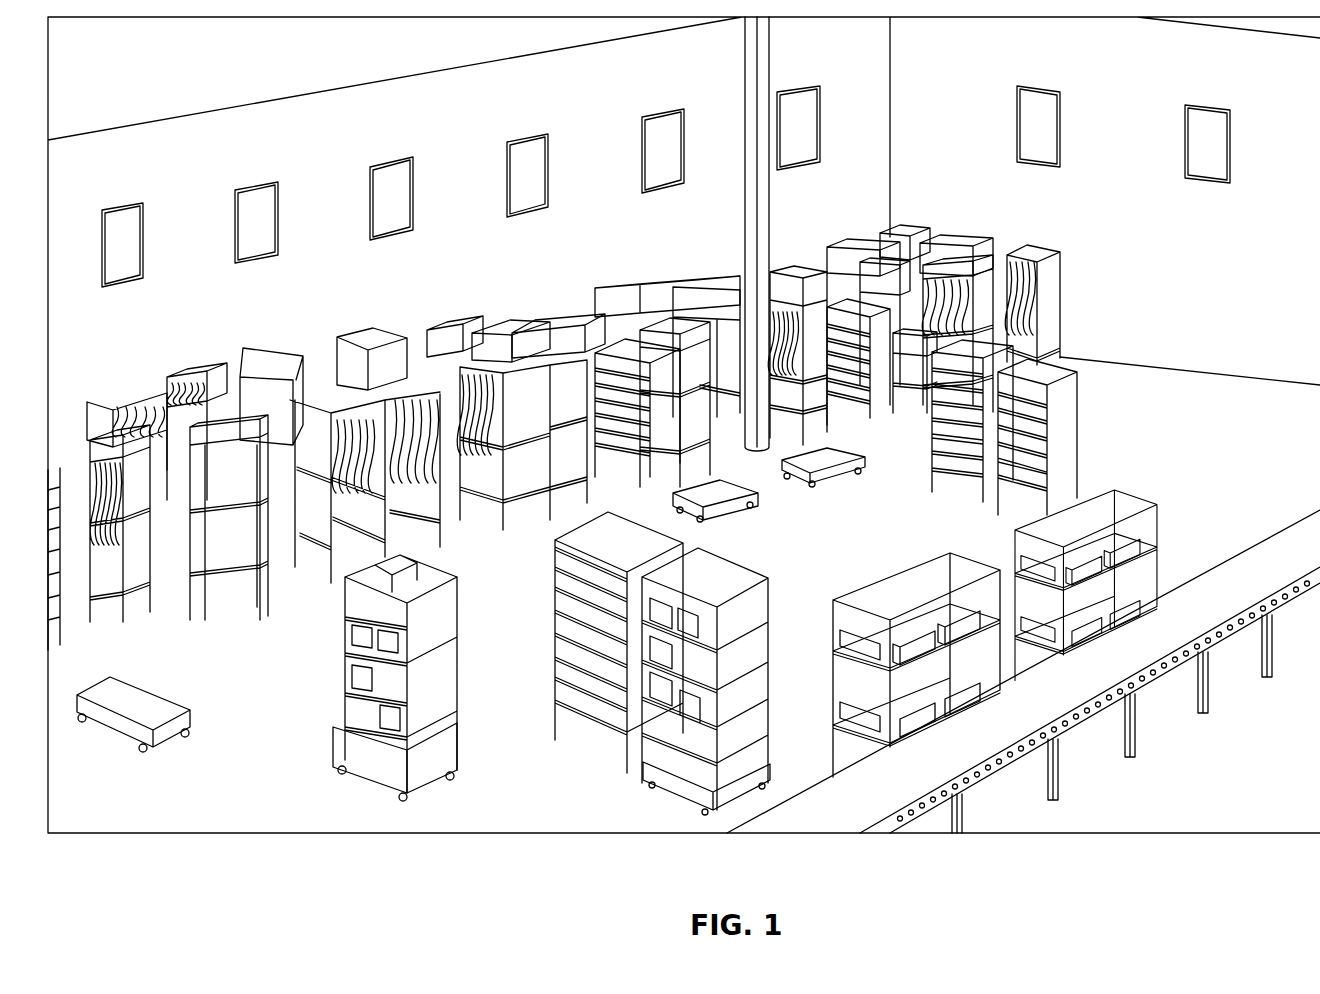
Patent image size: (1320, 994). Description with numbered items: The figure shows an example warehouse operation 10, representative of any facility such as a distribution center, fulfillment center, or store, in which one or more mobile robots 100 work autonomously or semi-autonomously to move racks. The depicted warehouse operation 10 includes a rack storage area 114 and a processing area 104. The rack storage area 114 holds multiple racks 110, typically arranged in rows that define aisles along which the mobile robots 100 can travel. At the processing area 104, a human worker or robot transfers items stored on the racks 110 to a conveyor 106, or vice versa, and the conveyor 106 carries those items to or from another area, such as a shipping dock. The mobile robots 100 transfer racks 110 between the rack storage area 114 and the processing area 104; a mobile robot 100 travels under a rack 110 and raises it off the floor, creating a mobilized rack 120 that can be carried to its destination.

The warehouse operation 10 is at (148, 90).
The mobile robot 100 is at (728, 512).
The processing area 104 is at (815, 655).
The conveyor 106 is at (881, 803).
The rack 110 is at (604, 501).
The rack storage area 114 is at (1012, 225).
The mobilized rack 120 is at (462, 577).